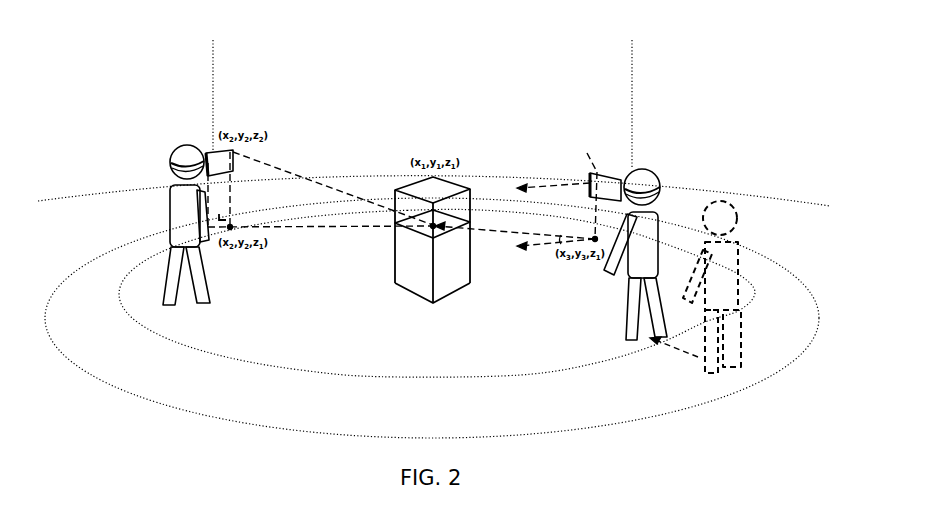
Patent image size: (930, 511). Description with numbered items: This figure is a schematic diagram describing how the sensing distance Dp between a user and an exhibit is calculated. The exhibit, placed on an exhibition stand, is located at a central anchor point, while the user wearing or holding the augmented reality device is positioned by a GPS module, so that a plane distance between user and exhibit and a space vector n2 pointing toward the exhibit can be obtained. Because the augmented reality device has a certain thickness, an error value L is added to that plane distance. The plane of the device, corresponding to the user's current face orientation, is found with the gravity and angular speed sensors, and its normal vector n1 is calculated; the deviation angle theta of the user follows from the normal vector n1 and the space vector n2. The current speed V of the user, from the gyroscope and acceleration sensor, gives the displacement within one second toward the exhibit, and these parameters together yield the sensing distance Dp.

The sensing distance Dp is at (332, 244).
The normal vector n1 is at (553, 180).
The space vector n2 is at (515, 225).
The orientation angle theta is at (556, 235).
The current speed V is at (674, 343).
The error value L is at (219, 212).